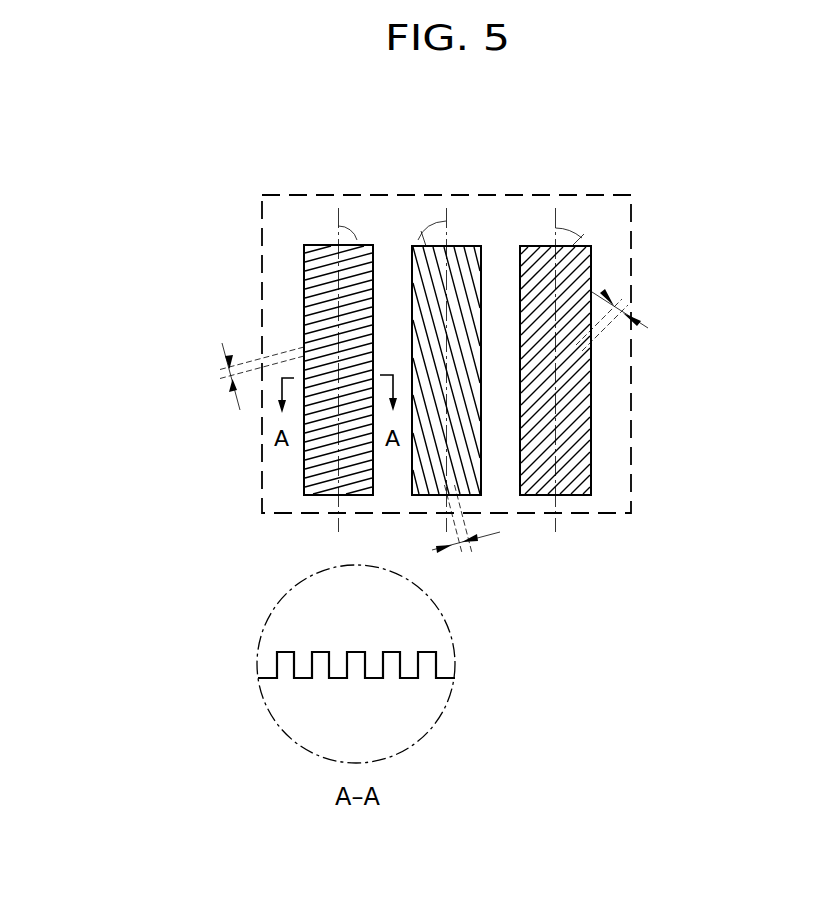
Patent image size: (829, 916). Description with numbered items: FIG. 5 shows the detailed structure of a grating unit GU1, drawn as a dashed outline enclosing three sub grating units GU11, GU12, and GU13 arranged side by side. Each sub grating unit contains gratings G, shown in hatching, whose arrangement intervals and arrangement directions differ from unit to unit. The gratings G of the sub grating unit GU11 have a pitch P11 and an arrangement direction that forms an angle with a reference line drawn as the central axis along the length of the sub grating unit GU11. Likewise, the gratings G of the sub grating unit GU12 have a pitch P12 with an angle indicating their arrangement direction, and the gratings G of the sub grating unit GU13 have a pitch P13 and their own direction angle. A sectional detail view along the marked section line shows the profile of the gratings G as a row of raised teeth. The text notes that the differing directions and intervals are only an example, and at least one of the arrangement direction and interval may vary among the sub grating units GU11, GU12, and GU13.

The grating unit GU1 is at (632, 258).
The sub grating unit GU11 is at (319, 245).
The sub grating unit GU12 is at (463, 246).
The sub grating unit GU13 is at (540, 246).
The pitch P11 is at (247, 376).
The pitch P12 is at (466, 536).
The pitch P13 is at (623, 318).
The gratings G is at (322, 651).